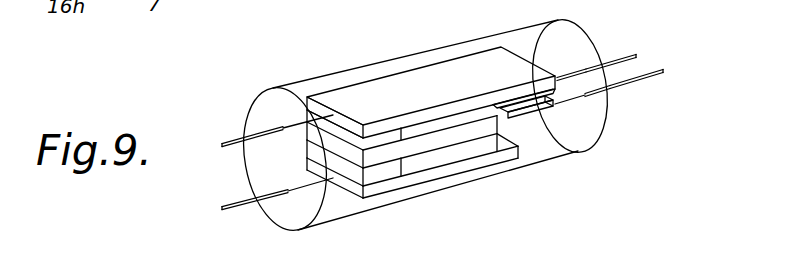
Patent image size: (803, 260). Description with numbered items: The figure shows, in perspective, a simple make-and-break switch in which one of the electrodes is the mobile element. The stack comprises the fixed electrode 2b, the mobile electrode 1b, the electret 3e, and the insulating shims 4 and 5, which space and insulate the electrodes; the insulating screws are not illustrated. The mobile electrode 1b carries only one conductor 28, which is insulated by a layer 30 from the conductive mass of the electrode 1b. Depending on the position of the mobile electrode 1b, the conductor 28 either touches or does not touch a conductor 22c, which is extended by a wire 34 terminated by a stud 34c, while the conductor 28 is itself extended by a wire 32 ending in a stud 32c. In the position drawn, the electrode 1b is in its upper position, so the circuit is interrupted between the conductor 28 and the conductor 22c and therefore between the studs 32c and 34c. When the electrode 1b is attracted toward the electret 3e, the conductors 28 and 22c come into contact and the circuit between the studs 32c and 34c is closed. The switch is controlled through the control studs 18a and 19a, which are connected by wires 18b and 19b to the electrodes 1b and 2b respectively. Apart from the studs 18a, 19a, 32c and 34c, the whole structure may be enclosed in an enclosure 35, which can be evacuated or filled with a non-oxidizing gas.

The mobile electrode 1b is at (408, 88).
The fixed electrode 2b is at (432, 168).
The electret 3e is at (480, 136).
The insulating shim 4 is at (377, 137).
The insulating shim 5 is at (383, 175).
The control stud 18a is at (249, 139).
The wire 18b is at (293, 127).
The control stud 19a is at (266, 204).
The wire 19b is at (303, 187).
The conductor 22c is at (527, 111).
The conductor 28 is at (523, 100).
The insulating layer 30 is at (493, 100).
The wire 32 is at (556, 76).
The stud 32c is at (615, 57).
The wire 34 is at (582, 94).
The stud 34c is at (660, 74).
The enclosure 35 is at (573, 155).